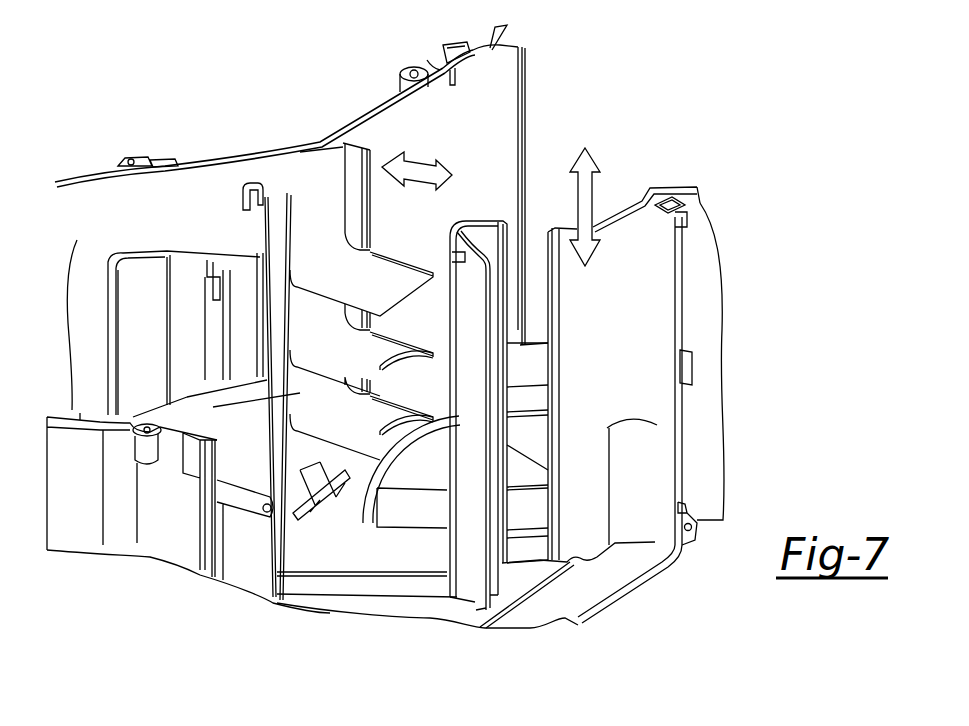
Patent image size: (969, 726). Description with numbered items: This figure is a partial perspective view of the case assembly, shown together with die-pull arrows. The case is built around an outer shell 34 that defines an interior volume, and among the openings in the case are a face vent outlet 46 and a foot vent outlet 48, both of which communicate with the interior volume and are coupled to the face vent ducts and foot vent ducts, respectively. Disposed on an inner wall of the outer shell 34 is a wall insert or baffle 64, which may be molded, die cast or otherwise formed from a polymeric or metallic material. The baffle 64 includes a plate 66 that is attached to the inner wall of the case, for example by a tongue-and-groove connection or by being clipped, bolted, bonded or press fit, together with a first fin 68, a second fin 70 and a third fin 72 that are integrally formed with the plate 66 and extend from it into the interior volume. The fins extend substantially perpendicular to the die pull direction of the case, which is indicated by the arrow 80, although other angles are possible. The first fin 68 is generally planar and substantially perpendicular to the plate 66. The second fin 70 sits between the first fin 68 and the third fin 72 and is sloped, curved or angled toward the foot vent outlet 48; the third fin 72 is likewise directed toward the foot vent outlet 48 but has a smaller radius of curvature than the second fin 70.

The outer shell 34 is at (385, 110).
The face vent outlet 46 is at (525, 75).
The wall insert or baffle 64 is at (280, 240).
The first fin 68 is at (395, 263).
The second fin 70 is at (400, 345).
The third fin 72 is at (395, 412).
The arrow 80 is at (598, 185).
The plate 66 is at (320, 500).
The foot vent outlet 48 is at (407, 490).